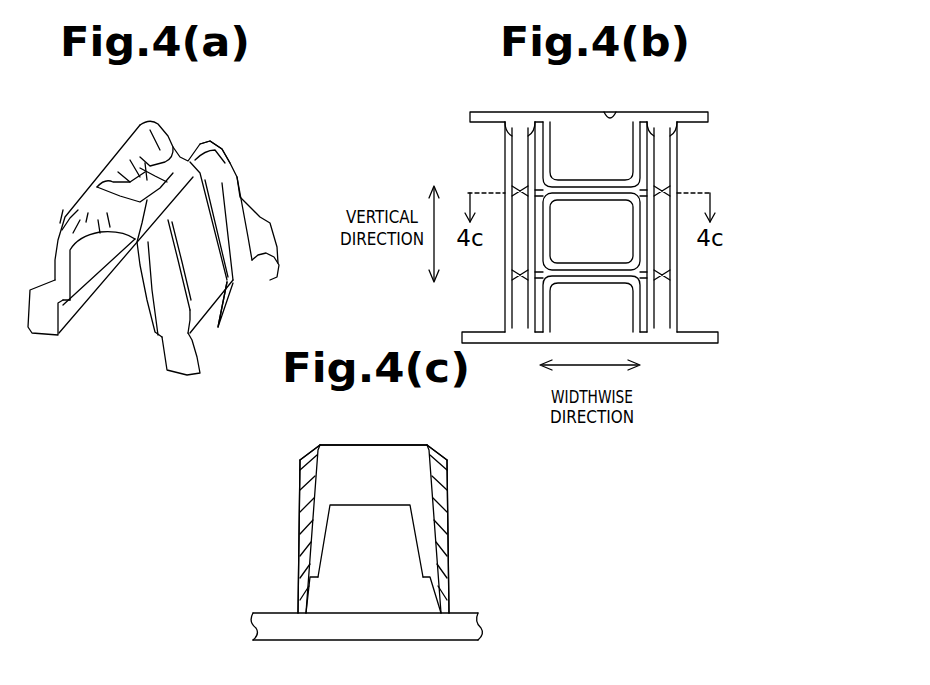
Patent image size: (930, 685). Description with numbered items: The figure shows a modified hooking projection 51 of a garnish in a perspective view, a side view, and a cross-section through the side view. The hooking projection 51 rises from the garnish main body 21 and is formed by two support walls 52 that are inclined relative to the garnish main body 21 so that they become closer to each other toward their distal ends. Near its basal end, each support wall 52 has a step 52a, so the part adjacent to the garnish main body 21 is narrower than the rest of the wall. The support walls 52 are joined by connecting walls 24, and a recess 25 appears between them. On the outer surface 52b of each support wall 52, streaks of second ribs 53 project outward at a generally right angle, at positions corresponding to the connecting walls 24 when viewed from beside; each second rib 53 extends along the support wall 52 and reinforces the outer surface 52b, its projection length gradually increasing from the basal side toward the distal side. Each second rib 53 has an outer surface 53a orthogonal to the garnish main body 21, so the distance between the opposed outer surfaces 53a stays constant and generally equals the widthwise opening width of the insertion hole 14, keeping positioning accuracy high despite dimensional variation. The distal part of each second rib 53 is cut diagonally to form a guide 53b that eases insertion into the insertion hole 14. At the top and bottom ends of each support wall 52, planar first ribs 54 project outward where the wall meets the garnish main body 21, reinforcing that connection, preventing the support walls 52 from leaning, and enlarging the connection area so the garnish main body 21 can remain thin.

In FIG. 4B, the insertion hole 14 is at (612, 110).
In FIG. 4C, the garnish main body 21 is at (275, 613).
In FIG. 4A, the connecting wall 24 is at (110, 182).
In FIG. 4B, the connecting wall 24 is at (606, 206).
In FIG. 4C, the connecting wall 24 is at (368, 445).
In FIG. 4A, the engaging recess 25 is at (142, 172).
In FIG. 4B, the engaging recess 25 is at (590, 187).
In FIG. 4A, the hooking projection 51 is at (52, 143).
In FIG. 4B, the hooking projection 51 is at (527, 97).
In FIG. 4C, the hooking projection 51 is at (428, 437).
In FIG. 4A, the support wall 52 is at (212, 156).
In FIG. 4C, the support wall 52 is at (414, 532).
In FIG. 4C, the step 52a is at (424, 580).
In FIG. 4A, the outer surface 52b is at (232, 178).
In FIG. 4B, the outer surface 52b is at (510, 155).
In FIG. 4A, the second rib 53 is at (216, 321).
In FIG. 4B, the second rib 53 is at (505, 275).
In FIG. 4C, the second rib 53 is at (300, 532).
In FIG. 4C, the outer surface of second rib 53a is at (300, 484).
In FIG. 4C, the guide 53b is at (318, 450).
In FIG. 4A, the first rib 54 is at (40, 338).
In FIG. 4B, the first rib 54 is at (697, 110).